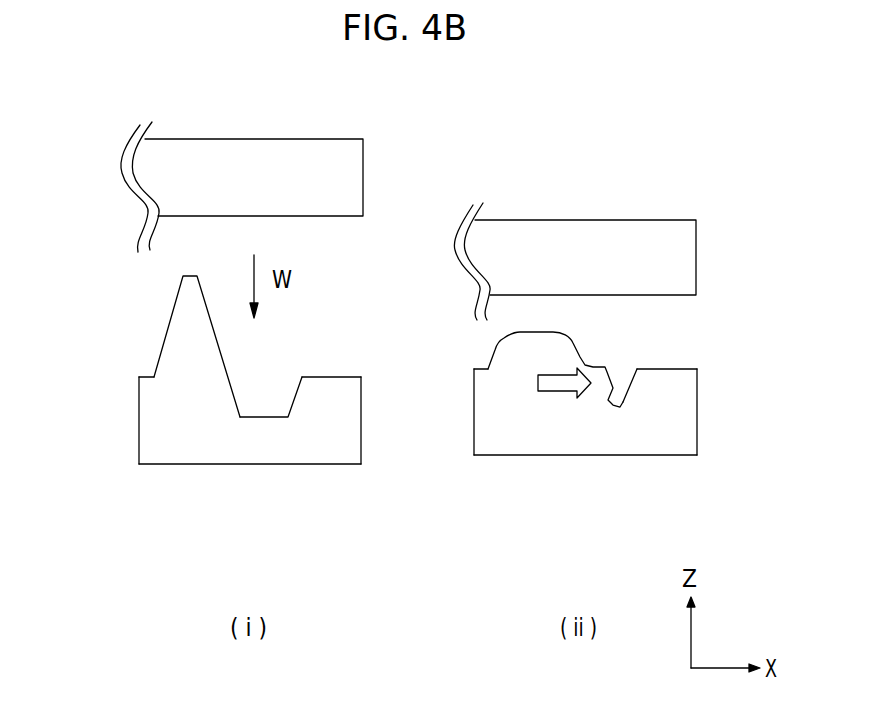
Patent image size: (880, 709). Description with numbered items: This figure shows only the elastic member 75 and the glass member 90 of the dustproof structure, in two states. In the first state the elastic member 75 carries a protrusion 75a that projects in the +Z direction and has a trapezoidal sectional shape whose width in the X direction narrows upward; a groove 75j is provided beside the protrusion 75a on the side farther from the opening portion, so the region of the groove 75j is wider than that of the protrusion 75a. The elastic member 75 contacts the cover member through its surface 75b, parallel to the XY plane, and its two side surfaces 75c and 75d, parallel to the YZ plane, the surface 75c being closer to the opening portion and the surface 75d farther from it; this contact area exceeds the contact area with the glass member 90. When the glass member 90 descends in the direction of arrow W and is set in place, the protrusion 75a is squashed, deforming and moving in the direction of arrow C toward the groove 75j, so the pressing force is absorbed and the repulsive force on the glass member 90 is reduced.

The glass member 90 is at (525, 232).
The elastic member 75 is at (526, 428).
The protrusion 75a is at (184, 339).
The surface 75b is at (195, 465).
The surface 75c is at (139, 417).
The surface 75d is at (361, 432).
The groove 75j is at (266, 405).
The arrow C is at (545, 382).